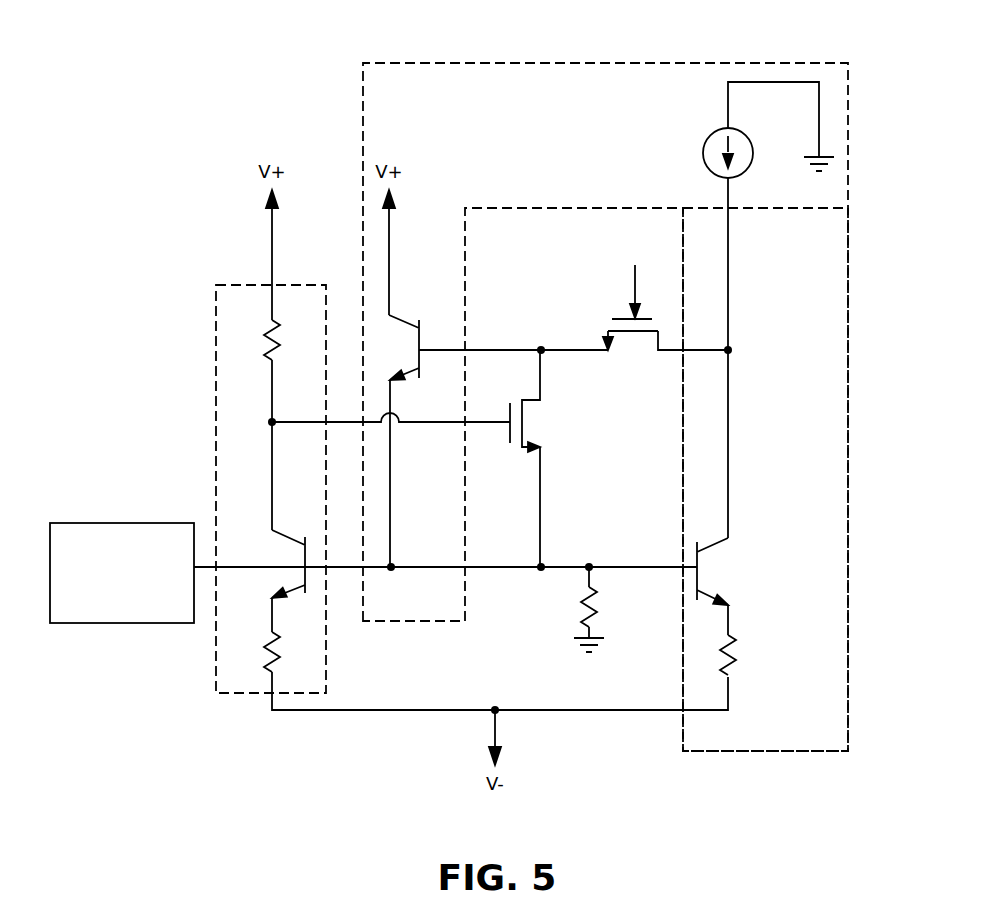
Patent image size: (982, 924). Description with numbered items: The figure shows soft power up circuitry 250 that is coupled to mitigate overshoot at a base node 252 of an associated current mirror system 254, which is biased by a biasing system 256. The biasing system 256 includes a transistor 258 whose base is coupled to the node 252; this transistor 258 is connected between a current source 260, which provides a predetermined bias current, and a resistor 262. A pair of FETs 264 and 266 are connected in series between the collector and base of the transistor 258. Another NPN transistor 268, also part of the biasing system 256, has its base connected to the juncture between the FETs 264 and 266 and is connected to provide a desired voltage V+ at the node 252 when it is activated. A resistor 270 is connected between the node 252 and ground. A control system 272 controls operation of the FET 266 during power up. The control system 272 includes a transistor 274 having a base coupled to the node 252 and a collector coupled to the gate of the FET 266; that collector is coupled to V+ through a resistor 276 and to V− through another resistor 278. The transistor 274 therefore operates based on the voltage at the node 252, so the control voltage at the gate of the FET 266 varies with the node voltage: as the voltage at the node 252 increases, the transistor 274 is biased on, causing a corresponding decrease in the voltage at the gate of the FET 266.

The soft power up circuitry 250 is at (282, 92).
The base node 252 is at (456, 569).
The current mirror system 254 is at (162, 623).
The biasing system 256 is at (733, 63).
The transistor 258 is at (727, 568).
The current source 260 is at (745, 170).
The resistor 262 is at (735, 672).
The FET 264 is at (630, 360).
The FET 266 is at (545, 425).
The NPN transistor 268 is at (395, 330).
The resistor 270 is at (582, 610).
The control system 272 is at (215, 322).
The transistor 274 is at (263, 530).
The resistor 276 is at (268, 360).
The resistor 278 is at (268, 640).